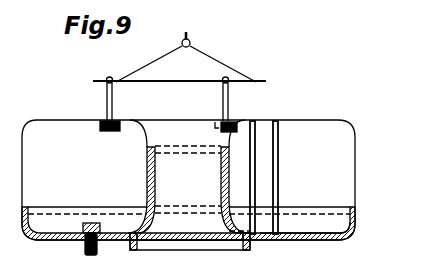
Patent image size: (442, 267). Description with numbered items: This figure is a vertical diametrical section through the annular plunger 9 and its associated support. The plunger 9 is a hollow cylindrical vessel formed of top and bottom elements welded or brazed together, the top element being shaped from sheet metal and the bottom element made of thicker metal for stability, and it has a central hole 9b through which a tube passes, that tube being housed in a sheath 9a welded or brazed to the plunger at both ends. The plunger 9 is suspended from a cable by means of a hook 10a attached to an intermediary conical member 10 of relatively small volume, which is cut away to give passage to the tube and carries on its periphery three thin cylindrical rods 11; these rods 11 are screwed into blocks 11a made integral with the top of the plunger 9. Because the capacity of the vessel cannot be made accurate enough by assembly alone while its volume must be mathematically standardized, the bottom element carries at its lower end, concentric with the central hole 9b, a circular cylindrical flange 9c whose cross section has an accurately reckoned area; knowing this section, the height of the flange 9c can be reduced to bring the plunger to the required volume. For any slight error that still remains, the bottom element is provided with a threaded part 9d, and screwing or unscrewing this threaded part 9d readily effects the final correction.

The annular plunger 9 is at (314, 121).
The sheath 9a is at (258, 242).
The central hole 9b is at (188, 189).
The circular cylindrical flange 9c is at (252, 247).
The threaded part 9d is at (83, 237).
The conical member 10 is at (233, 68).
The hook 10a is at (202, 35).
The rods 11 is at (107, 100).
The blocks 11a is at (100, 123).